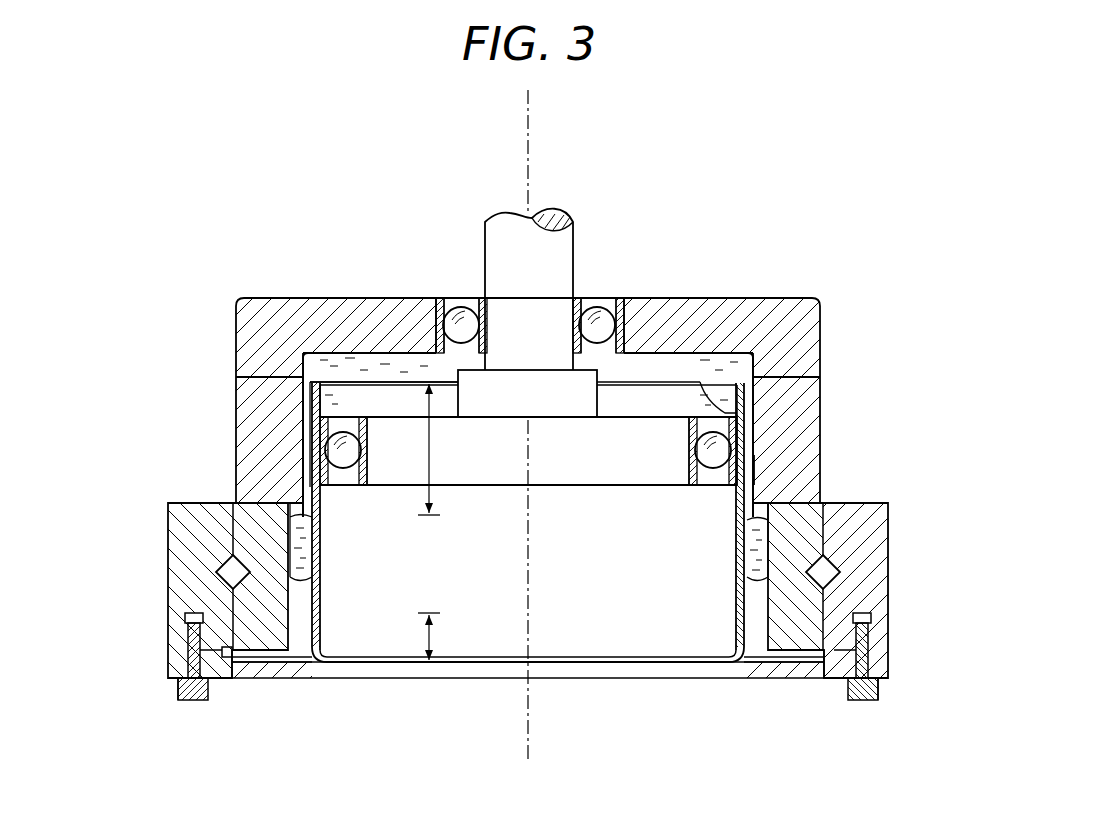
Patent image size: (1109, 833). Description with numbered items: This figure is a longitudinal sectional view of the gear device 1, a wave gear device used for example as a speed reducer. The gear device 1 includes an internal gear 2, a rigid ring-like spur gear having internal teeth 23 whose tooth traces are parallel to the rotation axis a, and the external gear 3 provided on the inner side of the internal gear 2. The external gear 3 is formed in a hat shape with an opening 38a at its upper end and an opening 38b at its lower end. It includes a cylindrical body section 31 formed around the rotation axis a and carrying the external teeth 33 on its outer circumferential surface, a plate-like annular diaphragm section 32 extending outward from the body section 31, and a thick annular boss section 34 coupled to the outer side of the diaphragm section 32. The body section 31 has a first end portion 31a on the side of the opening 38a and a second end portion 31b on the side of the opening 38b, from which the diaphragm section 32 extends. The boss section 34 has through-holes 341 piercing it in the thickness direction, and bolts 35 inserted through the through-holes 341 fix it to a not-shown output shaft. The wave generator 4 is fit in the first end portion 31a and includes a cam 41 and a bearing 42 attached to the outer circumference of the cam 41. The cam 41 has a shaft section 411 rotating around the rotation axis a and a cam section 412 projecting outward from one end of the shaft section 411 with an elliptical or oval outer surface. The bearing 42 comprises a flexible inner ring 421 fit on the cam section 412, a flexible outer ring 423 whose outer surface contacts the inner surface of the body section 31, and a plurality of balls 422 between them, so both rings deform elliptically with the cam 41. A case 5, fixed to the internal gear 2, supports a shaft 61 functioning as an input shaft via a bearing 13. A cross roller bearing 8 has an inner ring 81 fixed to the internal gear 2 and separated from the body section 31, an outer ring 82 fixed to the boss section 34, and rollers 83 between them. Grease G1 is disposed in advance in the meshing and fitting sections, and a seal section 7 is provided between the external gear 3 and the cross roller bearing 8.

The gear device 1 is at (862, 183).
The rotation axis a is at (528, 170).
The internal gear 2 is at (826, 415).
The internal teeth 23 is at (745, 470).
The external gear 3 is at (528, 575).
The body section 31 is at (320, 617).
The first end portion 31a is at (432, 455).
The second end portion 31b is at (432, 635).
The diaphragm section 32 is at (285, 662).
The external teeth 33 is at (745, 488).
The boss section 34 is at (218, 672).
The through-holes 341 is at (178, 690).
The bolts 35 is at (200, 701).
The opening 38a is at (687, 380).
The opening 38b is at (572, 663).
The wave generator 4 is at (648, 413).
The cam 41 is at (528, 346).
The shaft section 411 is at (423, 380).
The cam section 412 is at (407, 437).
The bearing 42 is at (403, 411).
The inner ring 421 is at (323, 420).
The balls 422 is at (340, 450).
The outer ring 423 is at (358, 478).
The case 5 is at (265, 303).
The shaft 61 is at (557, 253).
The bearing 13 is at (615, 297).
The seal section 7 is at (185, 620).
The cross roller bearing 8 is at (576, 590).
The inner ring 81 is at (800, 608).
The outer ring 82 is at (862, 537).
The rollers 83 is at (830, 572).
The grease G1 is at (340, 362).